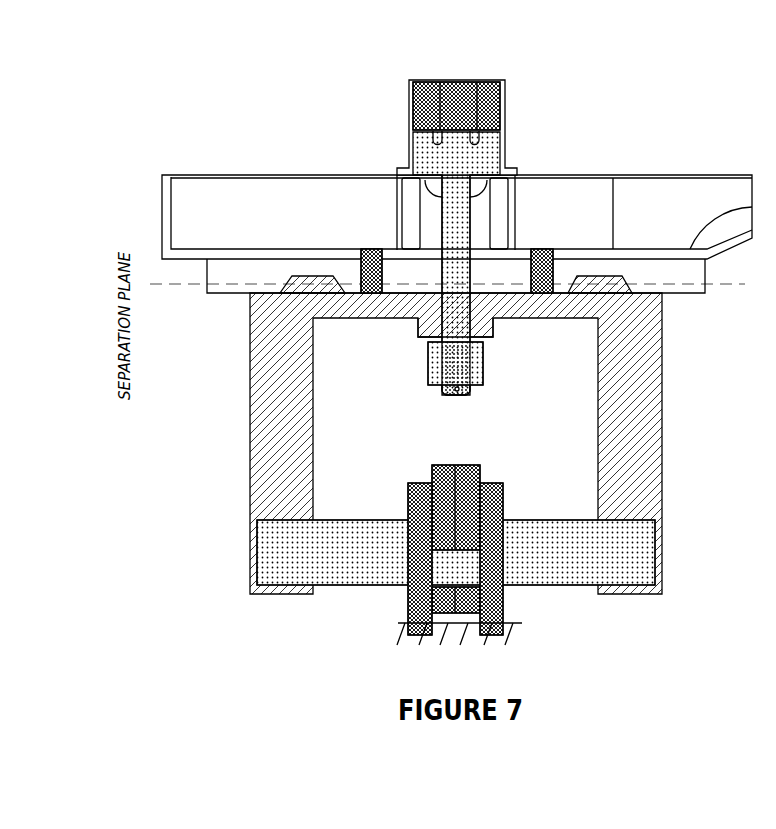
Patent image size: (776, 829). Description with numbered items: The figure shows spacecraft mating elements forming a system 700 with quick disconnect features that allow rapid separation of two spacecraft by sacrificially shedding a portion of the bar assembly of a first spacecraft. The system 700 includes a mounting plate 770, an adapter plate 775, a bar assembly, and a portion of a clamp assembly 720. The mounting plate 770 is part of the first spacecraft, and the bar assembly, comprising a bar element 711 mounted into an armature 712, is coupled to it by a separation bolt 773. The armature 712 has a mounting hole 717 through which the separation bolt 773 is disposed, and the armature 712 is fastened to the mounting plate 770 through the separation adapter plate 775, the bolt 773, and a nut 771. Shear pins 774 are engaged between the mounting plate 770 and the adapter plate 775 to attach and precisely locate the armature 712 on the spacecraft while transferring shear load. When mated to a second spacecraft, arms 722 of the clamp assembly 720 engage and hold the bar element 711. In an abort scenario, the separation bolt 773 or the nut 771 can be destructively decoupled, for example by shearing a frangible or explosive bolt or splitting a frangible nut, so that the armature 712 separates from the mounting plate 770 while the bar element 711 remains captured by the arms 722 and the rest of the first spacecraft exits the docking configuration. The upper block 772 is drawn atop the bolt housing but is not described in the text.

The system 700 is at (203, 86).
The mounting plate 770 is at (159, 195).
The upper connector block 772 is at (456, 106).
The separation bolt 773 is at (457, 237).
The shear pins 774 is at (369, 247).
The adapter plate 775 is at (222, 297).
The armature 712 is at (456, 435).
The mounting hole 717 is at (430, 318).
The nut 771 is at (424, 366).
The bar element 711 is at (456, 552).
The arms 722 is at (456, 539).
The clamp assembly 720 is at (404, 604).